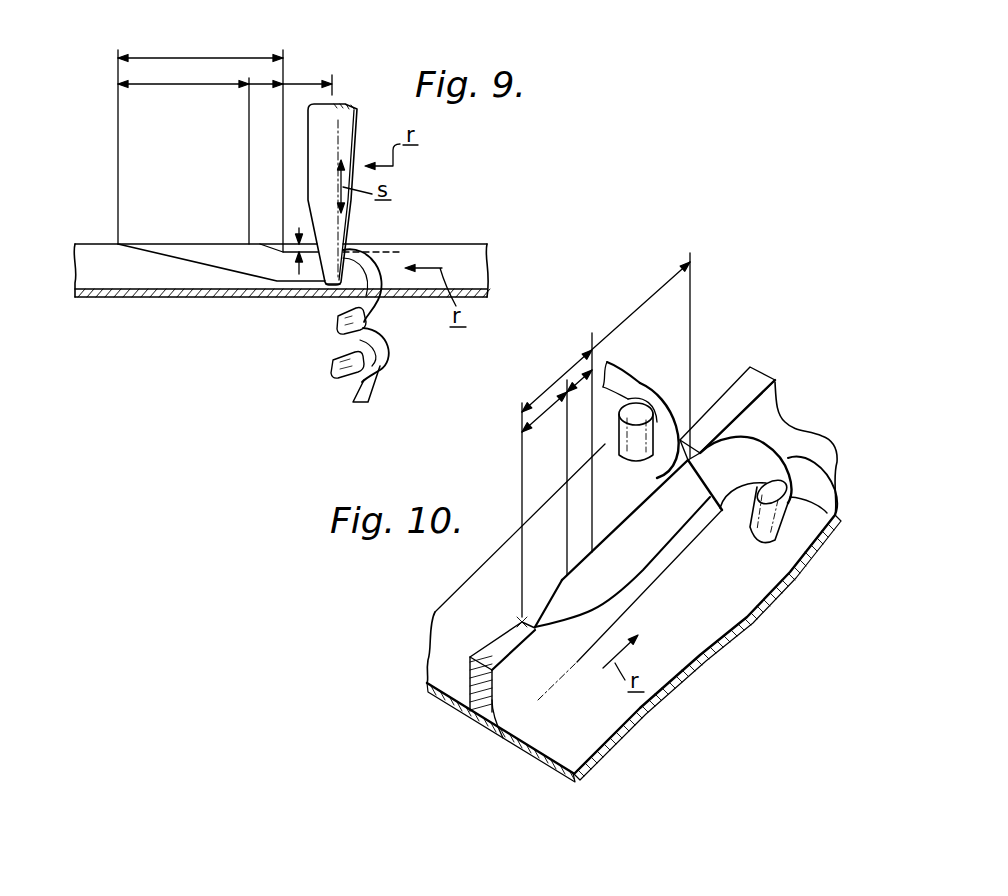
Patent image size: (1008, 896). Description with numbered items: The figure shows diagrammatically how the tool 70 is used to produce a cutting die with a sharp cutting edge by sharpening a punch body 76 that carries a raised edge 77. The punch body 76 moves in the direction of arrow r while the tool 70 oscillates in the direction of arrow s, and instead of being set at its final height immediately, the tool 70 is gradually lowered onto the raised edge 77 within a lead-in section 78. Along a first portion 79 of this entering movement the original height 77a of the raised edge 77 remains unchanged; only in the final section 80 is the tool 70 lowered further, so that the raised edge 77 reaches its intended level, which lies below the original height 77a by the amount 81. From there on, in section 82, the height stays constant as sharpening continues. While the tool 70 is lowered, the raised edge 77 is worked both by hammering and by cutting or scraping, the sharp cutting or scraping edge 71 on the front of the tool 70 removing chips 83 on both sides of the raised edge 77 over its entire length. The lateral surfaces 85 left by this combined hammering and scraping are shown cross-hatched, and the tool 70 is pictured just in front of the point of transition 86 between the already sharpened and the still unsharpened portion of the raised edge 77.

In FIG. 9, the tool 70 is at (348, 130).
In FIG. 9, the cutting or scraping edge 71 is at (367, 243).
In FIG. 9, the punch body 76 is at (260, 297).
In FIG. 10, the punch body 76 is at (598, 723).
In FIG. 9, the raised edge 77 is at (142, 272).
In FIG. 10, the raised edge 77 is at (508, 690).
In FIG. 9, the original height 77a is at (90, 243).
In FIG. 10, the original height 77a is at (483, 648).
In FIG. 9, the lead-in section 78 is at (186, 58).
In FIG. 10, the lead-in section 78 is at (556, 381).
In FIG. 9, the first portion of the entering movement 79 is at (209, 84).
In FIG. 10, the first portion of the entering movement 79 is at (543, 409).
In FIG. 9, the final section 80 is at (263, 84).
In FIG. 10, the final section 80 is at (578, 378).
In FIG. 9, the amount of lowering 81 is at (300, 300).
In FIG. 9, the sharpening section 82 is at (310, 84).
In FIG. 10, the sharpening section 82 is at (642, 306).
In FIG. 9, the chips 83 is at (381, 318).
In FIG. 10, the chips 83 is at (678, 357).
In FIG. 9, the lateral surfaces 85 is at (203, 257).
In FIG. 10, the lateral surfaces 85 is at (630, 562).
In FIG. 10, the point of transition 86 is at (703, 437).